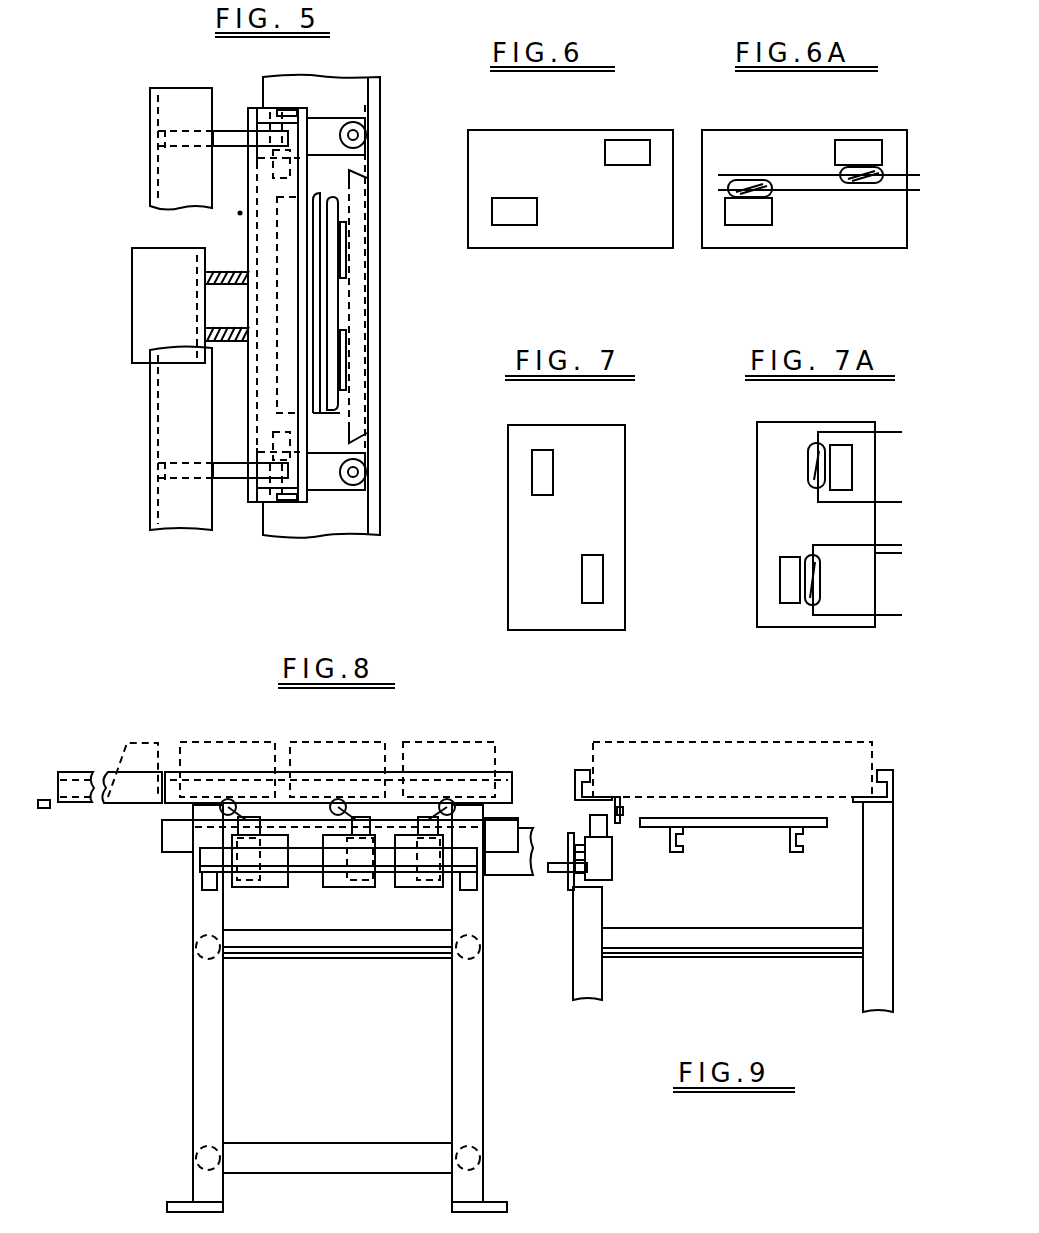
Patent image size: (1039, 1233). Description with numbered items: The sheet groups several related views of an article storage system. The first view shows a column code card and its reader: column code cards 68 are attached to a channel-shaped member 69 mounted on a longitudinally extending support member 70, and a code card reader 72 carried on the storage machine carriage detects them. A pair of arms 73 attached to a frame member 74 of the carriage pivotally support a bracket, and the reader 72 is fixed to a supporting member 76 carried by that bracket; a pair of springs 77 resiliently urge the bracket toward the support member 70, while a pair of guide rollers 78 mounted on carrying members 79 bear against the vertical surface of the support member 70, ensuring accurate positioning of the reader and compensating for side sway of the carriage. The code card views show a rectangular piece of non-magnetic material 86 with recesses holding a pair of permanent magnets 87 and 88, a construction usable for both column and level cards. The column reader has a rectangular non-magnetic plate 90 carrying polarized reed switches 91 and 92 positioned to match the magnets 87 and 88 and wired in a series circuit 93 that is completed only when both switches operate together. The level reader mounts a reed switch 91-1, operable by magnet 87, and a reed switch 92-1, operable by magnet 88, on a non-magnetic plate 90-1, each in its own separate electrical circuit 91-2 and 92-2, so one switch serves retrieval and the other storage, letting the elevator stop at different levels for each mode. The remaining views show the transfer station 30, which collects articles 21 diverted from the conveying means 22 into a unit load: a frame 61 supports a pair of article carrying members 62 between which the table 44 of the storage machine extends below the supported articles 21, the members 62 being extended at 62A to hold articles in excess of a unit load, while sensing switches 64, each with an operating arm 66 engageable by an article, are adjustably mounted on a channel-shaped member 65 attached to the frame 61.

In FIG. 8, the articles 21 is at (301, 748).
In FIG. 9, the articles 21 is at (732, 750).
In FIG. 8, the conveying means 22 is at (67, 833).
In FIG. 8, the transfer station 30 is at (159, 1063).
In FIG. 8, the article carrying table 44 is at (332, 864).
In FIG. 9, the article carrying table 44 is at (733, 845).
In FIG. 8, the frame 61 is at (350, 1008).
In FIG. 9, the frame 61 is at (723, 942).
In FIG. 8, the article carrying members 62 is at (327, 759).
In FIG. 9, the article carrying members 62 is at (738, 790).
In FIG. 8, the extension of article carrying members 62A is at (91, 756).
In FIG. 9, the sensing switch 64 is at (610, 875).
In FIG. 8, the channel-shaped member 65 is at (338, 861).
In FIG. 9, the channel-shaped member 65 is at (566, 843).
In FIG. 9, the operating arm 66 is at (642, 846).
In FIG. 5, the column code cards 68 is at (386, 248).
In FIG. 5, the channel-shaped member 69 is at (386, 341).
In FIG. 5, the support member 70 is at (350, 306).
In FIG. 5, the code card reader 72 is at (375, 291).
In FIG. 5, the arms 73 is at (250, 321).
In FIG. 5, the frame member 74 is at (178, 331).
In FIG. 5, the supporting member 76 is at (375, 306).
In FIG. 5, the springs 77 is at (190, 288).
In FIG. 5, the guide rollers 78 is at (372, 297).
In FIG. 5, the carrying members 79 is at (332, 508).
In FIG. 6, the non-magnetic material 86 is at (570, 212).
In FIG. 7, the non-magnetic material 86 is at (591, 527).
In FIG. 6, the permanent magnet 87 is at (627, 170).
In FIG. 7, the permanent magnet 87 is at (565, 584).
In FIG. 6, the permanent magnet 88 is at (539, 222).
In FIG. 7, the permanent magnet 88 is at (564, 476).
In FIG. 6A, the plate 90 is at (804, 213).
In FIG. 7A, the non-magnetic plate 90-1 is at (783, 524).
In FIG. 6A, the polarized reed switch 91 is at (861, 188).
In FIG. 7A, the polarized reed switch 91-1 is at (766, 465).
In FIG. 7A, the electrical circuit 91-2 is at (880, 450).
In FIG. 6A, the polarized reed switch 92 is at (786, 235).
In FIG. 7A, the polarized reed switch 92-1 is at (873, 580).
In FIG. 7A, the electrical circuit 92-2 is at (851, 612).
In FIG. 6A, the series circuit 93 is at (819, 163).